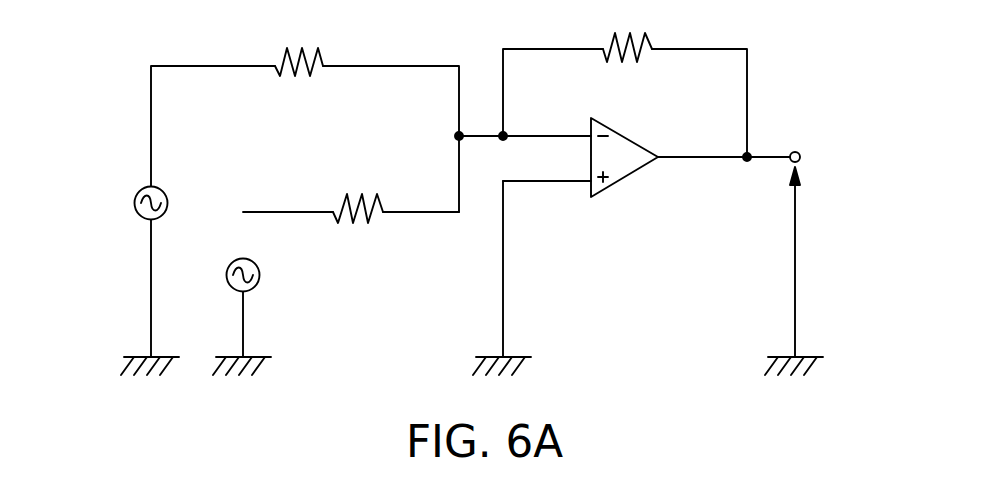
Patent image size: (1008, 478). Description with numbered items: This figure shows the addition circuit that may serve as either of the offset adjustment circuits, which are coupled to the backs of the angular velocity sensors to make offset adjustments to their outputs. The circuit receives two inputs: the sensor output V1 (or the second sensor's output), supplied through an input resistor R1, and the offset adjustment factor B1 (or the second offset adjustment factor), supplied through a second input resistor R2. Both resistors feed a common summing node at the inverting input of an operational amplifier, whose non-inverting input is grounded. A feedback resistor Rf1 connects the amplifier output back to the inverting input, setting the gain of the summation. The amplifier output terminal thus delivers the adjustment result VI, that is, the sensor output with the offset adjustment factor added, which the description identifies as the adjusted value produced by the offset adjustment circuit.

The input resistor R1 is at (299, 77).
The input resistor R2 is at (358, 224).
The feedback resistor Rf1 is at (629, 65).
The output of the first angular velocity sensor V1 is at (105, 188).
The offset adjustment factor B1 is at (289, 292).
The output voltage V1'' or V2'' VI is at (853, 262).